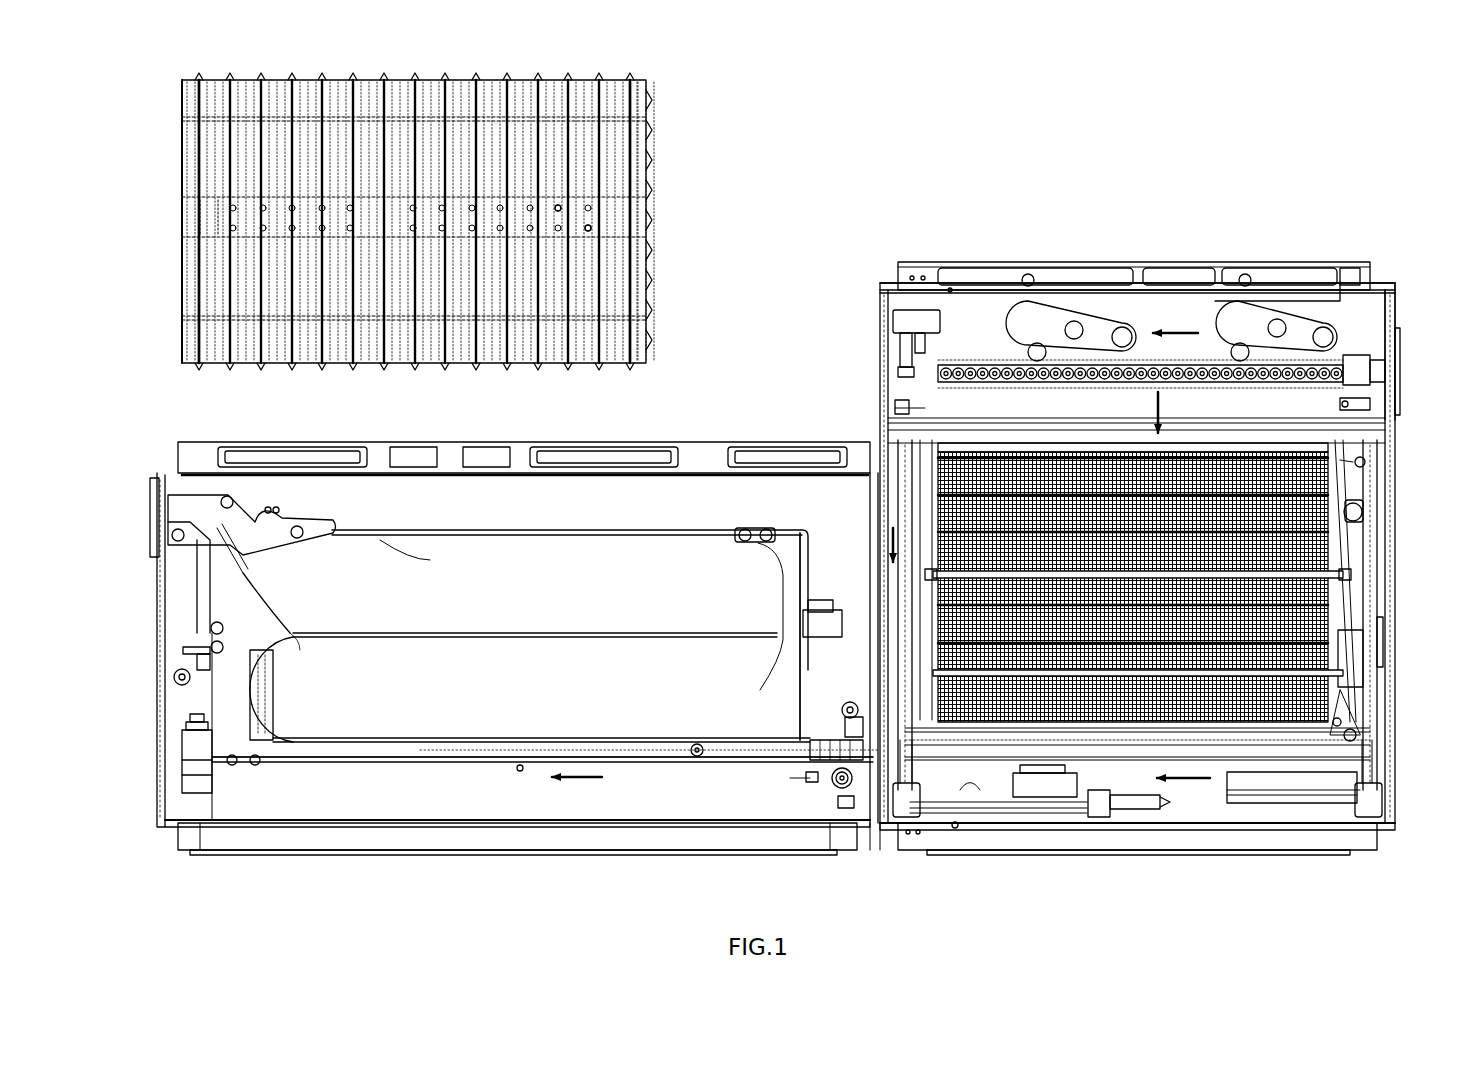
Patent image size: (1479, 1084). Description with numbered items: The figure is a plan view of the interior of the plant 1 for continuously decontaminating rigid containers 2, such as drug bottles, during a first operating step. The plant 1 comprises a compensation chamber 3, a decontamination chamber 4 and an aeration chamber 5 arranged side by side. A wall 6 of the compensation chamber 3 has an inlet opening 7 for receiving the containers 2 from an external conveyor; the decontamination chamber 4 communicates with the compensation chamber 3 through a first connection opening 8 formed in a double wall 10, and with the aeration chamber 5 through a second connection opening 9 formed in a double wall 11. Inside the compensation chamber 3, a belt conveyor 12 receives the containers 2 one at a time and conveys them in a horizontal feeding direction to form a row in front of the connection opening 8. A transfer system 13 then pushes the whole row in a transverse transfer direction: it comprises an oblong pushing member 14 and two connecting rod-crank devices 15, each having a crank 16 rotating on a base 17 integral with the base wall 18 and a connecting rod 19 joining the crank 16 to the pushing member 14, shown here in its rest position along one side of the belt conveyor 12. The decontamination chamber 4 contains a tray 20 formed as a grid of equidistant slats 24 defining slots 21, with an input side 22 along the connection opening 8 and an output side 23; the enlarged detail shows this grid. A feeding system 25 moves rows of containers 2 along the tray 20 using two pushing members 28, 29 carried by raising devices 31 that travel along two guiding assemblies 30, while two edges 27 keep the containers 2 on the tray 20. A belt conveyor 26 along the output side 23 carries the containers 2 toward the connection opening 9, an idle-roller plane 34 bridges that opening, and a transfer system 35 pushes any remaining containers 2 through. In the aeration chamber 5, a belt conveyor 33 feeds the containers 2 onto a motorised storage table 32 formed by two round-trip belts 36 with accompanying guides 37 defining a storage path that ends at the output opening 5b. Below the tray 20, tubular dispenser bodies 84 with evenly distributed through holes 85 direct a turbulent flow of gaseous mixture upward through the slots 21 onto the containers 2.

The plant 1 is at (842, 250).
The containers 2 is at (697, 742).
The compensation chamber 3 is at (1167, 250).
The decontamination chamber 4 is at (1135, 857).
The aeration chamber 5 is at (498, 868).
The output opening 5b is at (145, 512).
The wall 6 is at (1398, 302).
The inlet opening 7 is at (1410, 358).
The first connection opening 8 is at (900, 370).
The second connection opening 9 is at (848, 800).
The wall 10 is at (905, 415).
The wall 11 is at (888, 805).
The belt conveyor 12 is at (1378, 282).
The transfer system 13 is at (1152, 282).
The pushing member 14 is at (995, 282).
The connecting rod-crank devices 15 is at (1085, 282).
The crank 16 is at (1075, 282).
The base 17 is at (1015, 282).
The base wall 18 is at (1325, 282).
The connecting rod 19 is at (930, 378).
The tray 20 is at (163, 188).
The slots 21 is at (220, 302).
The input side 22 is at (1330, 446).
The output side 23 is at (1300, 742).
The slats 24 is at (215, 78).
The feeding system 25 is at (1355, 694).
The belt conveyor 26 is at (1250, 797).
The edges 27 is at (890, 600).
The pushing member 28 is at (1333, 572).
The pushing member 29 is at (1345, 740).
The guiding assemblies 30 is at (760, 690).
The raising devices 31 is at (797, 650).
The storage table 32 is at (300, 745).
The belt conveyor 33 is at (635, 750).
The idle-roller plane 34 is at (845, 795).
The transfer system 35 is at (1052, 855).
The round-trip belts 36 is at (285, 583).
The accompanying guides 37 is at (247, 603).
The dispenser bodies 84 is at (636, 216).
The through holes 85 is at (585, 233).